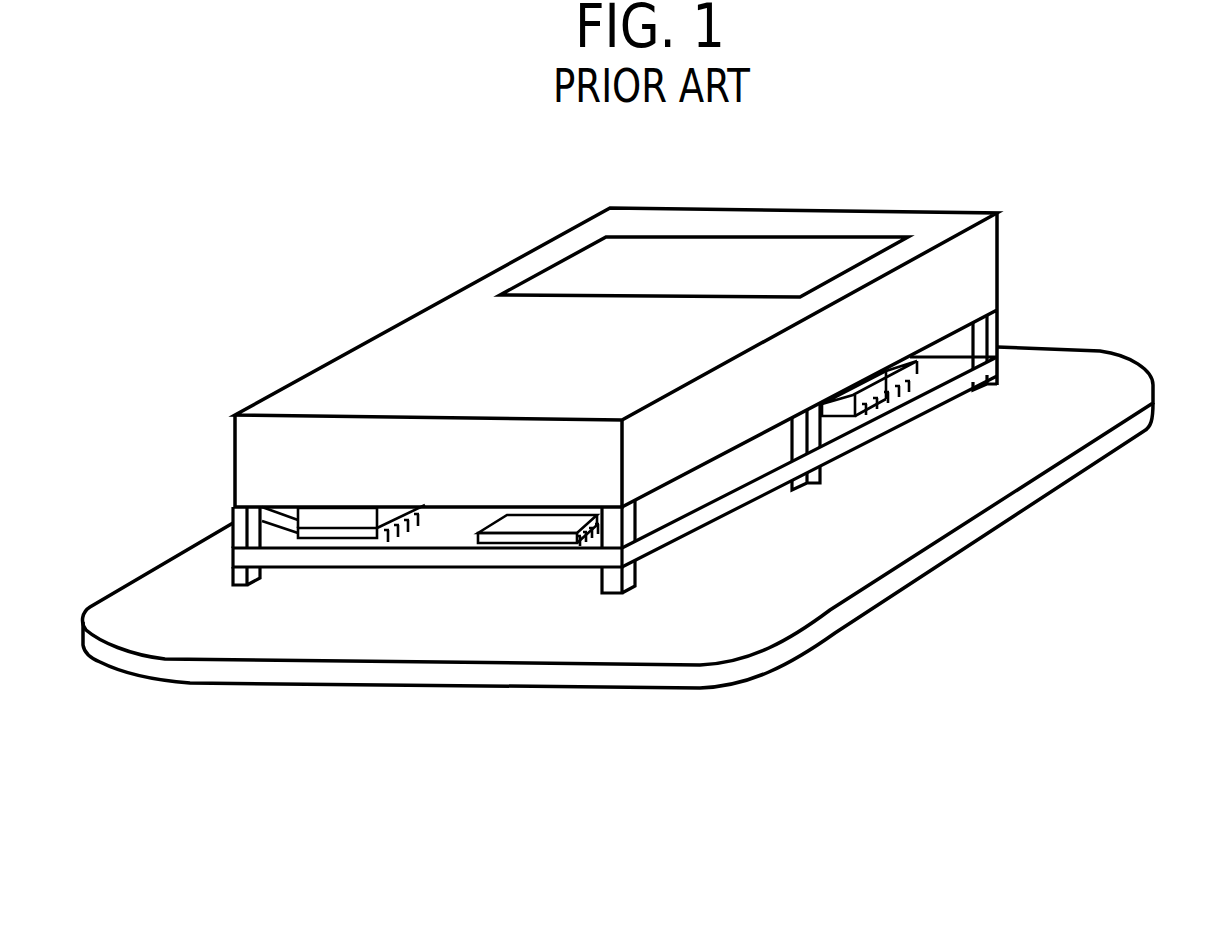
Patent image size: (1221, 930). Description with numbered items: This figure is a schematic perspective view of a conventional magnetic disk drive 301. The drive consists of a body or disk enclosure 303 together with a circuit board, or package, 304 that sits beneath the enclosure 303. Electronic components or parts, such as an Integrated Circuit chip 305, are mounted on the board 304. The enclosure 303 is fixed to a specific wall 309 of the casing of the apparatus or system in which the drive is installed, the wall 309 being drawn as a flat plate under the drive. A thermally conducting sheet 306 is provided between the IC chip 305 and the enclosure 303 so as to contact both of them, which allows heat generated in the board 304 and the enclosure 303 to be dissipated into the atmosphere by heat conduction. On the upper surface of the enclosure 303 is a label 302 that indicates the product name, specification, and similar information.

The magnetic disk drive 301 is at (609, 448).
The label 302 is at (733, 257).
The disk enclosure 303 is at (674, 331).
The circuit board 304 is at (697, 525).
The IC chip 305 is at (330, 533).
The thermally conducting sheet 306 is at (343, 419).
The wall 309 is at (1122, 385).